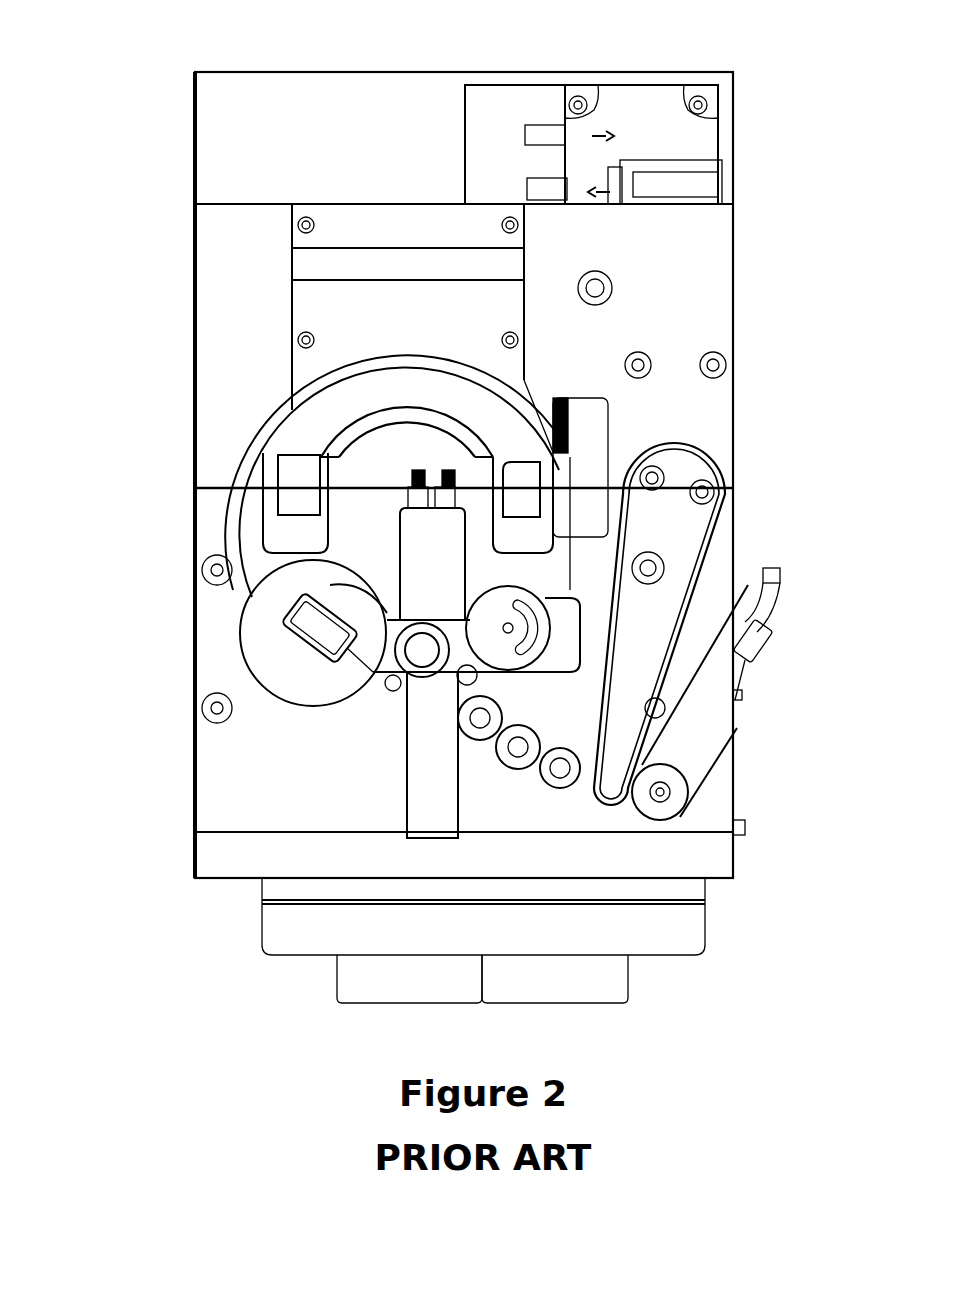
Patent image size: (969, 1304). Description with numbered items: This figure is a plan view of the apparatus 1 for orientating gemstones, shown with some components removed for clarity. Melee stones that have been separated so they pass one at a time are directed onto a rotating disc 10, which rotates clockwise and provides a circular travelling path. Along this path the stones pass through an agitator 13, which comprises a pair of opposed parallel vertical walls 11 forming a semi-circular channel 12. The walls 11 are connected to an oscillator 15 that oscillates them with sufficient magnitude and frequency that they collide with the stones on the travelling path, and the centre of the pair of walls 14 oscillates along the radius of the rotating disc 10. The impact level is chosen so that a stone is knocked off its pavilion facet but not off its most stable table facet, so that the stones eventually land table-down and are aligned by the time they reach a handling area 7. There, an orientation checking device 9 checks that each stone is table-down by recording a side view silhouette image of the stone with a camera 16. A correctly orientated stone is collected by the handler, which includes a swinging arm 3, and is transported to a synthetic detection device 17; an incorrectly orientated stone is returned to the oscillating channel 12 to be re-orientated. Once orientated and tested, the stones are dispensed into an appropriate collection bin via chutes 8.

The apparatus 1 is at (170, 75).
The swinging arm 3 is at (647, 608).
The handling area 7 is at (422, 656).
The chutes 8 is at (562, 770).
The orientation checking device 9 is at (425, 782).
The rotating disc 10 is at (310, 633).
The vertical walls 11 is at (307, 478).
The semi-circular channel 12 is at (308, 453).
The agitator 13 is at (280, 308).
The centre of the pair of walls 14 is at (398, 350).
The oscillator 15 is at (493, 302).
The camera 16 is at (437, 553).
The synthetic detection device 17 is at (703, 715).